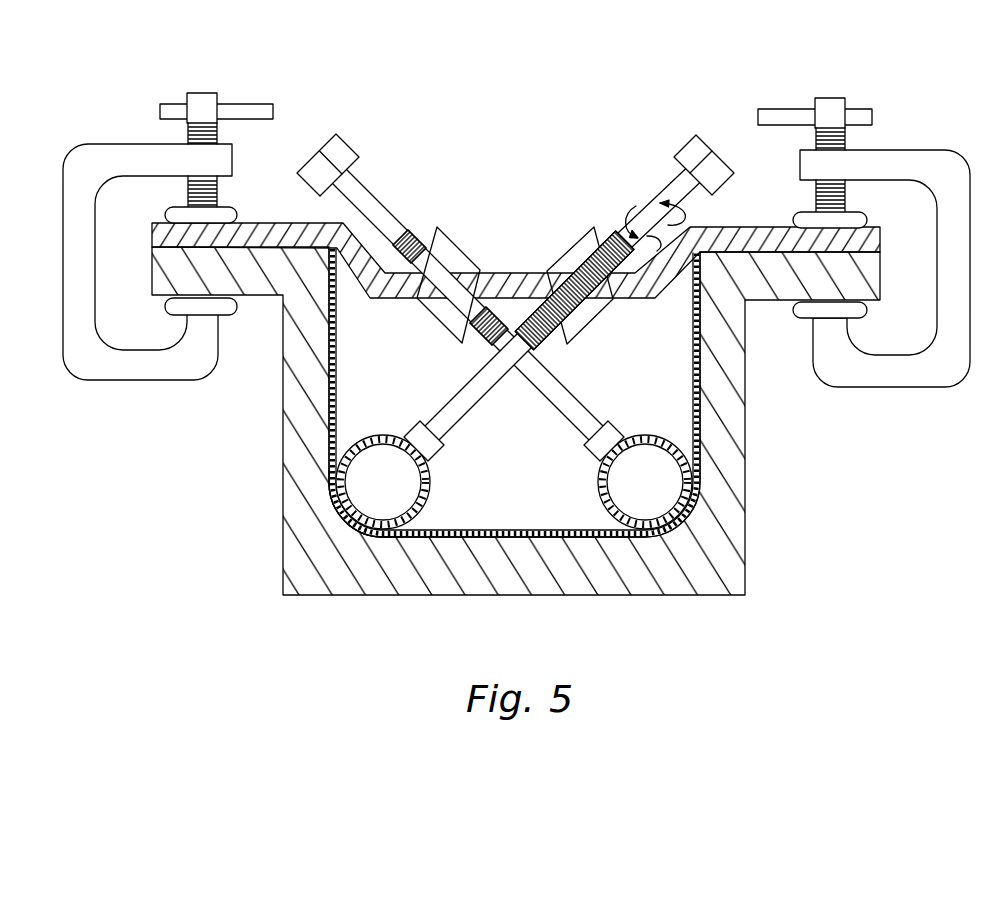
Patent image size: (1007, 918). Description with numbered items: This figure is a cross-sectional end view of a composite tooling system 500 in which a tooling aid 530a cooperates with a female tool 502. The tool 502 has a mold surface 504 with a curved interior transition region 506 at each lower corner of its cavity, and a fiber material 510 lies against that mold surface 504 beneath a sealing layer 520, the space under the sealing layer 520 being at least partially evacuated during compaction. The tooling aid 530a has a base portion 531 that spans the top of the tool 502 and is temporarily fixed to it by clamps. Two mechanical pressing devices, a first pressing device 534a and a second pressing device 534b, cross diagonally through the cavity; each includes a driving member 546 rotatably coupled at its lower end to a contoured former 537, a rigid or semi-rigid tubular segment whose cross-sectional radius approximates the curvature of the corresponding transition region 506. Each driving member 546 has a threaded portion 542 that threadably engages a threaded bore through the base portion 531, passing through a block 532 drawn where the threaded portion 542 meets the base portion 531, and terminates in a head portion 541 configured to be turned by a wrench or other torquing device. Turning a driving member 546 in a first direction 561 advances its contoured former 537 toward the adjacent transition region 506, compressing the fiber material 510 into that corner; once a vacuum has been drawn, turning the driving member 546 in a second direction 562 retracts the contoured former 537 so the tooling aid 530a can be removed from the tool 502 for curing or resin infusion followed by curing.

The composite tooling system 500 is at (618, 82).
The female tool 502 is at (723, 545).
The mold surface 504 is at (692, 340).
The transition region 506 is at (340, 487).
The fiber material 510 is at (338, 333).
The sealing layer 520 is at (338, 405).
The first tooling aid 530a is at (756, 226).
The base portion 531 is at (270, 223).
The anchor block 532 is at (596, 228).
The first pressing device 534a is at (550, 275).
The second pressing device 534b is at (585, 390).
The contoured former 537 is at (430, 495).
The head portion 541 is at (712, 156).
The threaded portion 542 is at (563, 272).
The driving member 546 is at (660, 187).
The first direction 561 is at (652, 188).
The second direction 562 is at (630, 210).